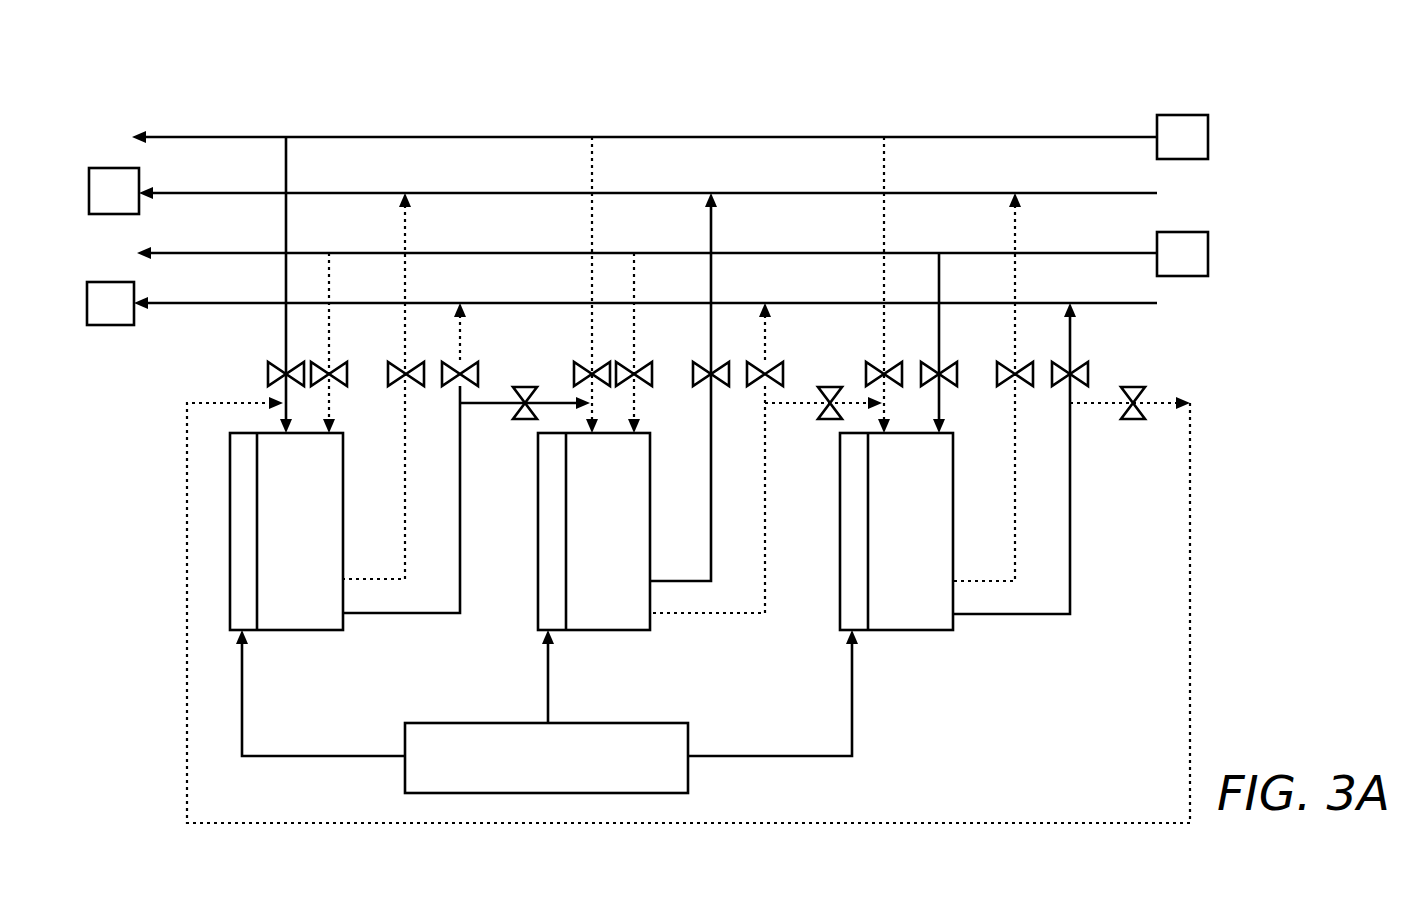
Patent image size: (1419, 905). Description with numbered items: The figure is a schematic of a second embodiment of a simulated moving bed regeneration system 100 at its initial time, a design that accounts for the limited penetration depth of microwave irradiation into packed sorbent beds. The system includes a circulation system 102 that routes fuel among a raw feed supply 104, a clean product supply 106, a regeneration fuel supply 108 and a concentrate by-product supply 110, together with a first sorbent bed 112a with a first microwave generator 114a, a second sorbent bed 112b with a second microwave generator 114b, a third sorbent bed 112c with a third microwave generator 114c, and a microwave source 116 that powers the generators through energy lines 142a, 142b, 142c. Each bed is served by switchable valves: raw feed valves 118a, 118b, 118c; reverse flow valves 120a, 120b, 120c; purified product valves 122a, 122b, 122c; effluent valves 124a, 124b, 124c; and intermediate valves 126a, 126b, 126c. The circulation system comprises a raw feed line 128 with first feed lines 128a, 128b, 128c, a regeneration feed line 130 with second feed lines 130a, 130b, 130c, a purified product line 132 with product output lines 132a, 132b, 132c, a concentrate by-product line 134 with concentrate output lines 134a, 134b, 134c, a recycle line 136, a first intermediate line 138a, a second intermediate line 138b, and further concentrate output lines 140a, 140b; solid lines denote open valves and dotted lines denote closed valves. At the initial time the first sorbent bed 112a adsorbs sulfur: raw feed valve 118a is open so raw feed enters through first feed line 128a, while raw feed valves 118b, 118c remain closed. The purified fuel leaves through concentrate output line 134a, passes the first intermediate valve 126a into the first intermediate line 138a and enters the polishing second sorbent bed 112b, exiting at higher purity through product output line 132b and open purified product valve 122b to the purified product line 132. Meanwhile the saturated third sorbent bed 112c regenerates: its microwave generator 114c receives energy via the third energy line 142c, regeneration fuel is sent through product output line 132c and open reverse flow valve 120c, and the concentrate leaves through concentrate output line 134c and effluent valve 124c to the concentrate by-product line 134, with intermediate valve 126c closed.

The simulated moving bed regeneration system 100 is at (975, 88).
The circulation system 102 is at (1205, 492).
The raw feed supply 104 is at (1178, 159).
The clean product supply 106 is at (128, 168).
The regeneration fuel supply 108 is at (1178, 276).
The concentrate by-product supply 110 is at (123, 282).
The first sorbent bed 112a is at (245, 555).
The second sorbent bed 112b is at (585, 551).
The third sorbent bed 112c is at (884, 559).
The first microwave generator 114a is at (230, 577).
The second microwave generator 114b is at (538, 600).
The third microwave generator 114c is at (840, 605).
The microwave source 116 is at (683, 793).
The raw feed valve 118a is at (284, 372).
The raw feed valve 118b is at (590, 372).
The raw feed valve 118c is at (882, 372).
The reverse flow valve 120a is at (329, 373).
The reverse flow valve 120b is at (634, 373).
The reverse flow valve 120c is at (939, 373).
The purified product valve 122a is at (404, 380).
The purified product valve 122b is at (709, 380).
The purified product valve 122c is at (1013, 380).
The effluent valve 124a is at (462, 370).
The effluent valve 124b is at (765, 372).
The effluent valve 124c is at (1070, 372).
The first intermediate valve 126a is at (522, 405).
The second intermediate valve 126b is at (828, 405).
The third intermediate valve 126c is at (1130, 405).
The raw feed line 128 is at (660, 137).
The first feed line 128a is at (286, 165).
The first feed line 128b is at (592, 163).
The first feed line 128c is at (884, 160).
The regeneration feed line 130 is at (1048, 253).
The second feed line 130a is at (329, 294).
The second feed line 130b is at (634, 296).
The second feed line 130c is at (939, 296).
The purified product line 132 is at (1048, 193).
The product output line 132a is at (405, 235).
The product output line 132b is at (711, 234).
The product output line 132c is at (1012, 228).
The concentrate by-product line 134 is at (1048, 303).
The concentrate output line 134a is at (460, 532).
The concentrate output line 134b is at (793, 535).
The concentrate output line 134c is at (1070, 528).
The recycle line 136 is at (1190, 633).
The first intermediate line 138a is at (550, 405).
The second intermediate line 138b is at (850, 405).
The concentrate output line 140a is at (460, 340).
The concentrate output line 140b is at (765, 332).
The energy line 142a is at (292, 756).
The energy line 142b is at (548, 690).
The third energy line 142c is at (852, 700).